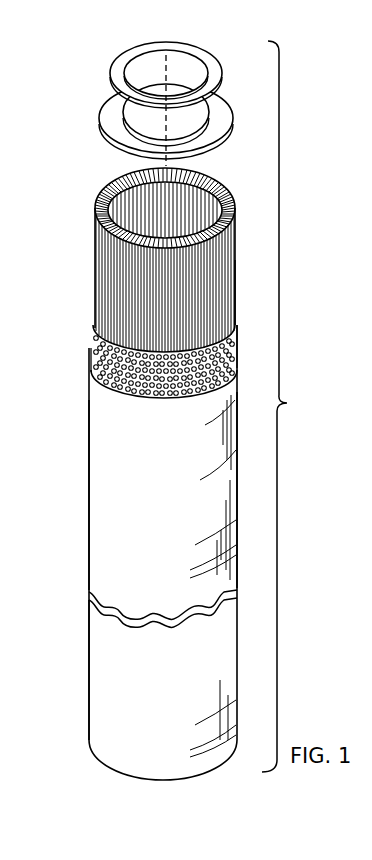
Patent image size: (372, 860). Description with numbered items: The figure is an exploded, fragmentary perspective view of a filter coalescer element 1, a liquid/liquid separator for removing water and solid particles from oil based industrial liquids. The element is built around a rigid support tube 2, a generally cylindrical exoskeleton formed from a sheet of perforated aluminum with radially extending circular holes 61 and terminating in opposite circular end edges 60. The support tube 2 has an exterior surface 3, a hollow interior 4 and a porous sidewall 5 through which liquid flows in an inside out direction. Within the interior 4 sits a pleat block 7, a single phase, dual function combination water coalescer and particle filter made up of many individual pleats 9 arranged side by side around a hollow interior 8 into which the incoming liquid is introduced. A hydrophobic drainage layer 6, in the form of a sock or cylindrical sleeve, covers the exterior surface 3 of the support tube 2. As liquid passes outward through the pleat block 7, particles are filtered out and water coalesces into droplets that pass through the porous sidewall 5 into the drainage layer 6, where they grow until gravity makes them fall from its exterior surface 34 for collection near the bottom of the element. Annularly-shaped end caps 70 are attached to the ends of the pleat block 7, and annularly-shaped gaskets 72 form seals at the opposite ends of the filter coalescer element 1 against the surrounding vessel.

The filter coalescer element 1 is at (281, 406).
The support tube 2 is at (147, 546).
The exterior surface 3 is at (91, 352).
The hollow interior 4 is at (93, 310).
The porous sidewall 5 is at (92, 336).
The hydrophobic drainage layer 6 is at (89, 432).
The pleat block 7 is at (155, 256).
The hollow interior 8 is at (205, 180).
The pleats 9 is at (95, 210).
The exterior surface 34 is at (88, 494).
The circular end edges 60 is at (236, 306).
The circular holes 61 is at (229, 360).
The end caps 70 is at (106, 108).
The gaskets 72 is at (118, 62).